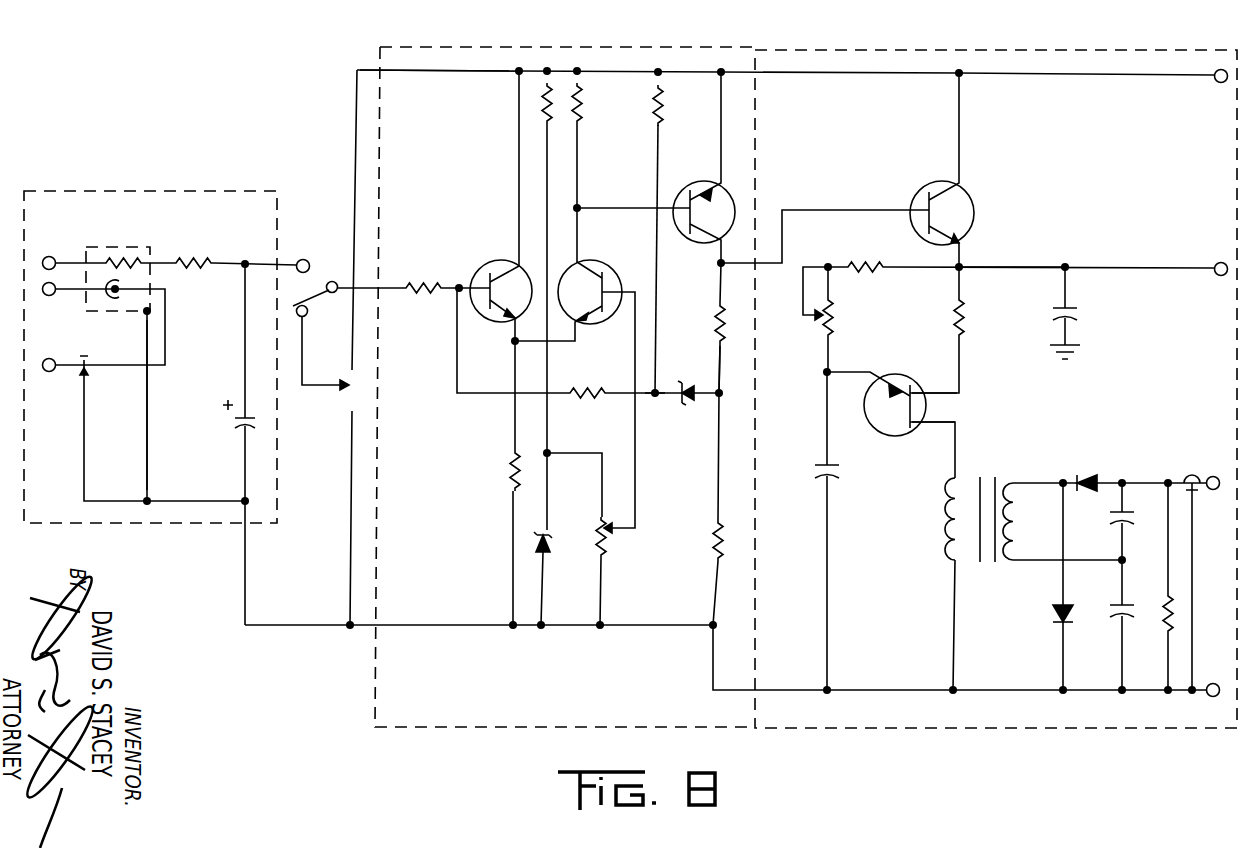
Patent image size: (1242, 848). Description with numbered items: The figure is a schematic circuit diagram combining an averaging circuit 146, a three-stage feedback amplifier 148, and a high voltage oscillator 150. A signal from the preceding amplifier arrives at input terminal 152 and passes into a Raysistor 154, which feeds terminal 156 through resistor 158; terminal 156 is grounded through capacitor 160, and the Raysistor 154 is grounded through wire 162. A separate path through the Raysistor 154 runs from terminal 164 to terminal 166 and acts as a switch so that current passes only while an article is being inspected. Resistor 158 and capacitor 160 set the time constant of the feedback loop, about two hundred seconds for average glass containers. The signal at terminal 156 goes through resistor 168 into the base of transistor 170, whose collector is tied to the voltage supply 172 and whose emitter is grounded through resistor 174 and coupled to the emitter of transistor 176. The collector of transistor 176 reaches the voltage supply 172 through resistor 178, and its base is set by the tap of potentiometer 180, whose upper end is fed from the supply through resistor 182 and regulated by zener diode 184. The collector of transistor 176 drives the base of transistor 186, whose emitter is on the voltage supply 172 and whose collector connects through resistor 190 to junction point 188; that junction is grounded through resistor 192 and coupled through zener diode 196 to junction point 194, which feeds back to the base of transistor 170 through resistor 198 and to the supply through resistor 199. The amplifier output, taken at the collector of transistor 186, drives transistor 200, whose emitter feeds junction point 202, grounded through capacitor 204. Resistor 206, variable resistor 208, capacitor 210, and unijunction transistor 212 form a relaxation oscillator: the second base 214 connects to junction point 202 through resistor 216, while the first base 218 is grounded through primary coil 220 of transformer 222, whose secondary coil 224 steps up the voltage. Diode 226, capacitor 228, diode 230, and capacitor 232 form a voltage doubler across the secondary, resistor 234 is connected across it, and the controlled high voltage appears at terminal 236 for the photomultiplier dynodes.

The averaging circuit 146 is at (163, 190).
The three-stage feedback amplifier 148 is at (597, 47).
The high voltage oscillator 150 is at (1000, 50).
The input terminal 152 is at (64, 236).
The Raysistor 154 is at (98, 247).
The terminal 156 is at (322, 236).
The resistor 158 is at (210, 258).
The capacitor 160 is at (240, 428).
The wire 162 is at (149, 408).
The terminal 164 is at (68, 312).
The terminal 166 is at (68, 344).
The resistor 168 is at (421, 274).
The transistor 170 is at (500, 260).
The voltage supply 172 is at (445, 73).
The resistor 174 is at (510, 460).
The transistor 176 is at (618, 244).
The resistor 178 is at (580, 124).
The potentiometer 180 is at (607, 553).
The resistor 182 is at (545, 100).
The zener diode 184 is at (548, 538).
The transistor 186 is at (711, 182).
The junction point 188 is at (716, 388).
The resistor 190 is at (714, 310).
The resistor 192 is at (714, 526).
The junction point 194 is at (654, 396).
The zener diode 196 is at (685, 400).
The resistor 198 is at (570, 391).
The resistor 199 is at (665, 108).
The transistor 200 is at (966, 192).
The junction point 202 is at (968, 263).
The capacitor 204 is at (1084, 308).
The resistor 206 is at (855, 262).
The variable resistor 208 is at (838, 320).
The capacitor 210 is at (832, 472).
The unijunction transistor 212 is at (923, 360).
The second base 214 is at (940, 400).
The resistor 216 is at (970, 306).
The first base 218 is at (944, 418).
The primary coil 220 is at (952, 520).
The transformer 222 is at (972, 478).
The secondary coil 224 is at (1020, 520).
The diode 226 is at (1053, 612).
The capacitor 228 is at (1115, 618).
The diode 230 is at (1095, 478).
The capacitor 232 is at (1115, 522).
The resistor 234 is at (1165, 606).
The terminal 236 is at (1213, 476).